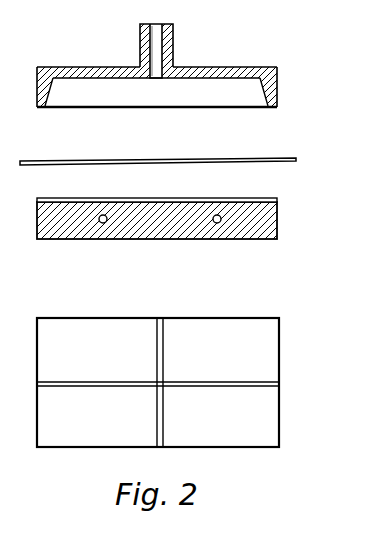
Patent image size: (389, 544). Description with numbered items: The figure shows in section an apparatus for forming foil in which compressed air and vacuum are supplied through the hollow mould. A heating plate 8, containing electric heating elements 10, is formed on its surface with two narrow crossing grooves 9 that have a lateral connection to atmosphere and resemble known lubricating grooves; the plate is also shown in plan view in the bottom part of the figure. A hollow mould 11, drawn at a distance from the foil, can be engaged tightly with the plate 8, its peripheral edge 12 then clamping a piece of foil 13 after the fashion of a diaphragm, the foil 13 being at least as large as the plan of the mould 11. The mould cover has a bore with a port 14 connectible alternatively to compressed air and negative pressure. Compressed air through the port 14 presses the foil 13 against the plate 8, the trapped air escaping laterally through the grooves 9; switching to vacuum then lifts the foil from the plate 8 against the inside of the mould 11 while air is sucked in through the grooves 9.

The heating plate 8 is at (250, 237).
The grooves 9 is at (262, 198).
The electric heating elements 10 is at (102, 223).
The hollow mould 11 is at (278, 66).
The peripheral edge 12 is at (278, 106).
The piece of foil 13 is at (297, 159).
The port 14 is at (174, 33).